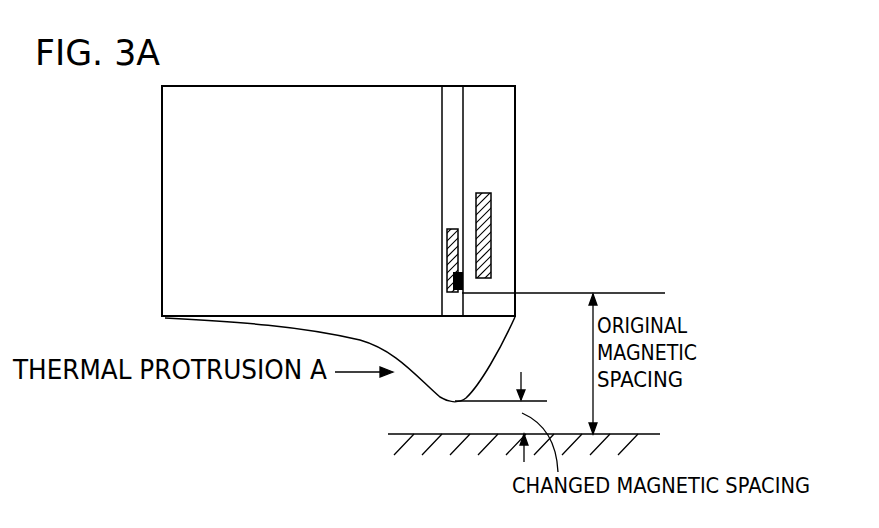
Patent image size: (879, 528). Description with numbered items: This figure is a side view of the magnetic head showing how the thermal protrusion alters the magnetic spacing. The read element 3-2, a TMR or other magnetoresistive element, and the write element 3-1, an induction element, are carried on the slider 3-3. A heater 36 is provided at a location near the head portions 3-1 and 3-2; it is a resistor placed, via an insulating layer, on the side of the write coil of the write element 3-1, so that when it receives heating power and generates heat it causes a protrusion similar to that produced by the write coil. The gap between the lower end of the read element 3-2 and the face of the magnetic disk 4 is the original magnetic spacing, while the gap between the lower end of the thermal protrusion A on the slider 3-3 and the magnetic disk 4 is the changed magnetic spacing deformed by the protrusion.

The slider 3-3 is at (252, 122).
The write element 3-1 is at (478, 152).
The heater 36 is at (466, 221).
The read element 3-2 is at (440, 278).
The magnetic disk 4 is at (418, 455).